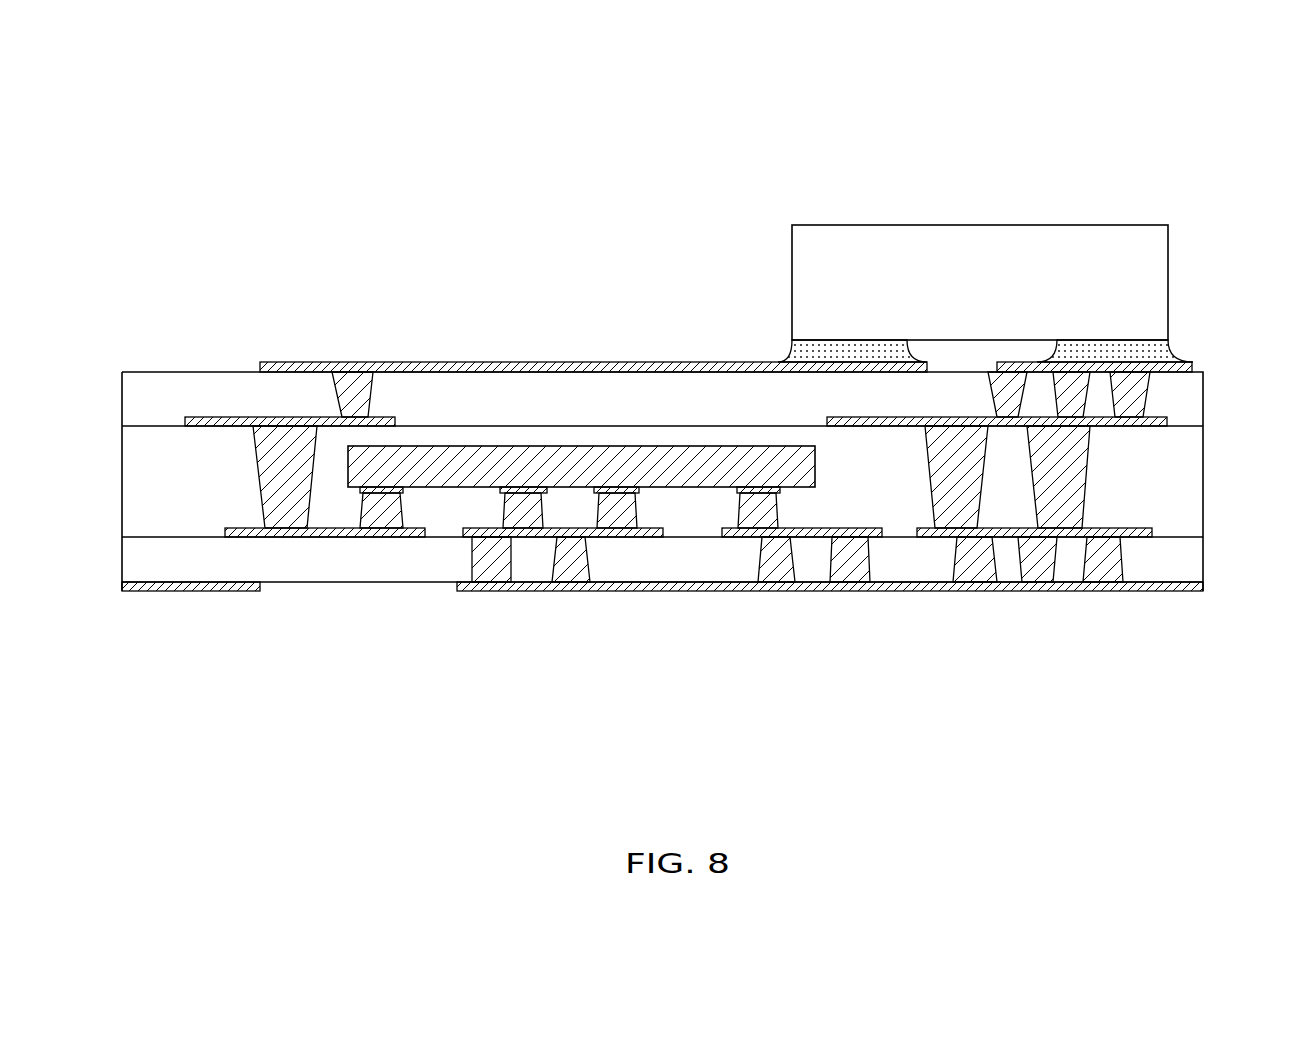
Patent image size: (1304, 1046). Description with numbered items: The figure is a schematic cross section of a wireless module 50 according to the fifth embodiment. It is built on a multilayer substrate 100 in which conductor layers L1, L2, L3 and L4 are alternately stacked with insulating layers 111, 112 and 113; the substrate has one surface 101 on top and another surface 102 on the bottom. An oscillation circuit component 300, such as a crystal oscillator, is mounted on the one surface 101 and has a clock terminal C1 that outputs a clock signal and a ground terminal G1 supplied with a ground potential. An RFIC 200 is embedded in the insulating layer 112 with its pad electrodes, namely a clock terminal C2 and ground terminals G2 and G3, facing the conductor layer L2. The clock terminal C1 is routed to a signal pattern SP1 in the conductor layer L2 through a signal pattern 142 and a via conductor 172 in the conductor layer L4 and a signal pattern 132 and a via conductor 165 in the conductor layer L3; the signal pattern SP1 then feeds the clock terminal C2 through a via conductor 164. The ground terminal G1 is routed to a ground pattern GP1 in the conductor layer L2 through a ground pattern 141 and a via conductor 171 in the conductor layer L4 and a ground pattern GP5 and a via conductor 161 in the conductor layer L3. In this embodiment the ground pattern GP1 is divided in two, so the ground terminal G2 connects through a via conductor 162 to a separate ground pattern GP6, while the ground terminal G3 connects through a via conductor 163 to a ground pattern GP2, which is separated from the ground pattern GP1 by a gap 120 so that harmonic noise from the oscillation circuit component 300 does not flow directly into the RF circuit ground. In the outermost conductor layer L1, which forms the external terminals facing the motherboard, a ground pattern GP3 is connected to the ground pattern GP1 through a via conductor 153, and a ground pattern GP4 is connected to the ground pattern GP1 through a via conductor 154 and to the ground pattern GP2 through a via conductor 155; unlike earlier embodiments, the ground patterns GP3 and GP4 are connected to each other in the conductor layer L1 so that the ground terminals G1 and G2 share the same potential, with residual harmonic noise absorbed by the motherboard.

The wireless module 50 is at (1112, 149).
The oscillation circuit component 300 is at (988, 235).
The clock terminal C1 is at (790, 353).
The clock terminal C2 is at (385, 487).
The signal pattern 142 is at (300, 362).
The ground pattern 141 is at (1028, 361).
The ground pattern GP5 is at (963, 416).
The ground terminal G1 is at (1112, 343).
The ground terminal G2 is at (777, 487).
The ground terminal G3 is at (615, 487).
The one surface 101 is at (1195, 368).
The other surface 102 is at (400, 583).
The multilayer substrate 100 is at (1221, 345).
The via conductor 172 is at (343, 398).
The via conductor 171 is at (1130, 388).
The insulating layer 113 is at (1192, 408).
The insulating layer 112 is at (1192, 486).
The insulating layer 111 is at (1192, 560).
The signal pattern 132 is at (195, 427).
The via conductor 165 is at (263, 487).
The via conductor 161 is at (1072, 487).
The RFIC 200 is at (680, 465).
The via conductor 164 is at (402, 507).
The via conductor 163 is at (637, 507).
The via conductor 162 is at (777, 507).
The signal pattern SP1 is at (333, 538).
The ground pattern GP6 is at (872, 526).
The ground pattern GP1 is at (927, 526).
The ground pattern GP2 is at (626, 540).
The ground pattern GP3 is at (1074, 590).
The ground pattern GP4 is at (802, 590).
The via conductor 155 is at (477, 562).
The via conductor 154 is at (855, 560).
The via conductor 153 is at (1105, 558).
The gap 120 is at (695, 545).
The conductor layer L1 is at (102, 587).
The conductor layer L2 is at (102, 533).
The conductor layer L3 is at (102, 422).
The conductor layer L4 is at (102, 368).